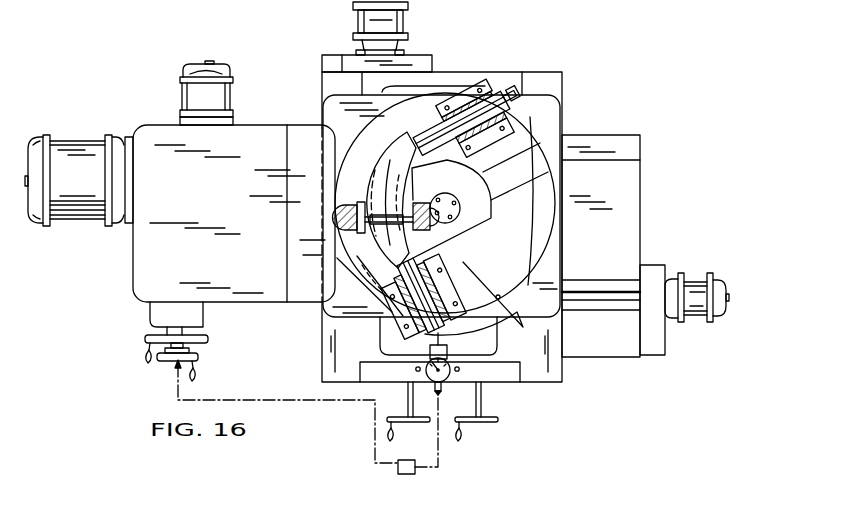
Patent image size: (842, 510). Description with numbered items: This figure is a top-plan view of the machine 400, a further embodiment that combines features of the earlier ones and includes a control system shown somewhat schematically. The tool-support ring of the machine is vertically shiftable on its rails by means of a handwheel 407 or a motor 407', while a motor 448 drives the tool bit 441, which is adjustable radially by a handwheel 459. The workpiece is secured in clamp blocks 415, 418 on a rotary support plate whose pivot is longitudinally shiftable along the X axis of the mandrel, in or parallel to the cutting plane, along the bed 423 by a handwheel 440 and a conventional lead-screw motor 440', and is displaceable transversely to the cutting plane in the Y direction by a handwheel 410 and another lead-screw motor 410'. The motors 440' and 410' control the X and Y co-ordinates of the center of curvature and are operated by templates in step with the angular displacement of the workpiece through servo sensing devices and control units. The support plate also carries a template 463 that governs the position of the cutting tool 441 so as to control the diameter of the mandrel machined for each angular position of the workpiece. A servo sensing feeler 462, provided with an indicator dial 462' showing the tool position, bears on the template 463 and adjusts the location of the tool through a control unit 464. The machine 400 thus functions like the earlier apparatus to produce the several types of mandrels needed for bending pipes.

The machine 400 is at (316, 58).
The handwheel 407 is at (202, 322).
The motor 407' is at (79, 166).
The handwheel 410 is at (409, 422).
The lead-screw motor 410' is at (402, 28).
The clamp block 415 is at (508, 113).
The clamp block 418 is at (474, 301).
The bed 423 is at (628, 228).
The handwheel 440 is at (476, 422).
The lead-screw motor 440' is at (697, 284).
The tool bit 441 is at (441, 204).
The motor 448 is at (231, 74).
The handwheel 459 is at (199, 357).
The servo sensing feeler 462 is at (480, 370).
The indicator dial 462' is at (394, 370).
The template 463 is at (489, 292).
The control unit 464 is at (397, 470).